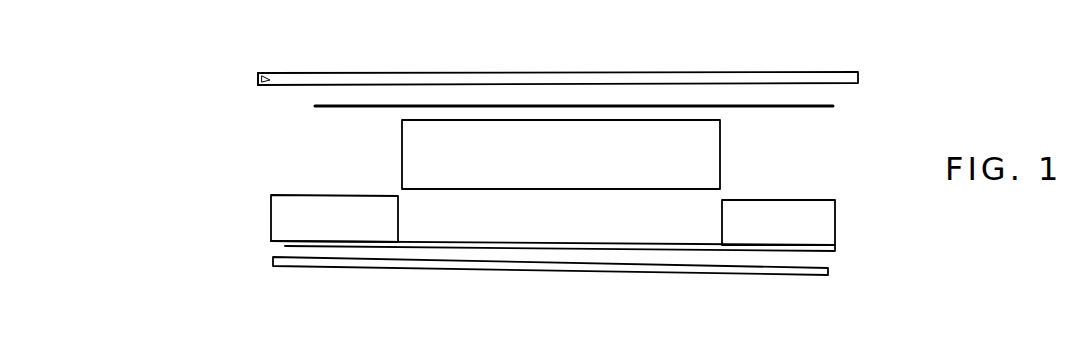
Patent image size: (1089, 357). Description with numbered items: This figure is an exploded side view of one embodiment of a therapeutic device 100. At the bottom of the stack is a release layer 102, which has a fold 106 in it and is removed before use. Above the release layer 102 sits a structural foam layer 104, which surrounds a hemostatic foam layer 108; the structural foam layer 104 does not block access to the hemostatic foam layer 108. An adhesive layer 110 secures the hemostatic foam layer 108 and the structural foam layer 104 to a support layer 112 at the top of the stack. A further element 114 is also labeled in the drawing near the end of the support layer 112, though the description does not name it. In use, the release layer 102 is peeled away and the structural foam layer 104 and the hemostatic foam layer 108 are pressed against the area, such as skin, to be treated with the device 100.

The therapeutic device 100 is at (875, 256).
The release layer 102 is at (780, 278).
The structural foam layer 104 is at (835, 218).
The fold 106 is at (290, 247).
The hemostatic foam layer 108 is at (720, 150).
The adhesive layer 110 is at (840, 105).
The support layer 112 is at (858, 74).
The edge of cover plate 114 is at (262, 80).